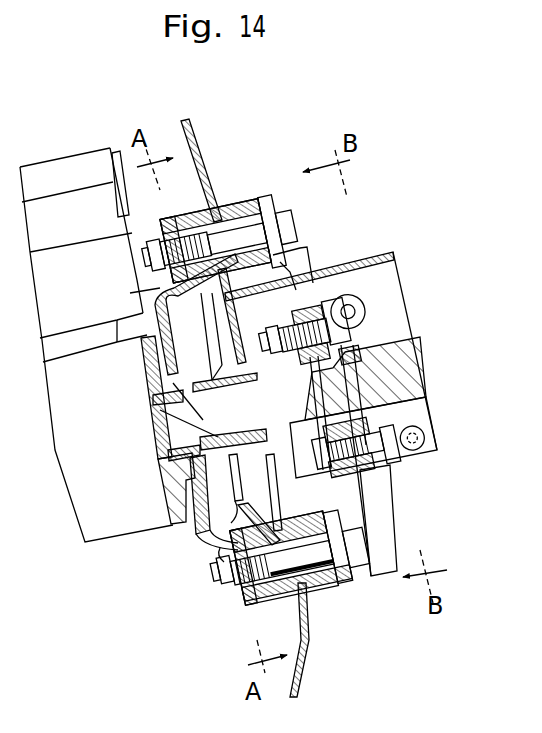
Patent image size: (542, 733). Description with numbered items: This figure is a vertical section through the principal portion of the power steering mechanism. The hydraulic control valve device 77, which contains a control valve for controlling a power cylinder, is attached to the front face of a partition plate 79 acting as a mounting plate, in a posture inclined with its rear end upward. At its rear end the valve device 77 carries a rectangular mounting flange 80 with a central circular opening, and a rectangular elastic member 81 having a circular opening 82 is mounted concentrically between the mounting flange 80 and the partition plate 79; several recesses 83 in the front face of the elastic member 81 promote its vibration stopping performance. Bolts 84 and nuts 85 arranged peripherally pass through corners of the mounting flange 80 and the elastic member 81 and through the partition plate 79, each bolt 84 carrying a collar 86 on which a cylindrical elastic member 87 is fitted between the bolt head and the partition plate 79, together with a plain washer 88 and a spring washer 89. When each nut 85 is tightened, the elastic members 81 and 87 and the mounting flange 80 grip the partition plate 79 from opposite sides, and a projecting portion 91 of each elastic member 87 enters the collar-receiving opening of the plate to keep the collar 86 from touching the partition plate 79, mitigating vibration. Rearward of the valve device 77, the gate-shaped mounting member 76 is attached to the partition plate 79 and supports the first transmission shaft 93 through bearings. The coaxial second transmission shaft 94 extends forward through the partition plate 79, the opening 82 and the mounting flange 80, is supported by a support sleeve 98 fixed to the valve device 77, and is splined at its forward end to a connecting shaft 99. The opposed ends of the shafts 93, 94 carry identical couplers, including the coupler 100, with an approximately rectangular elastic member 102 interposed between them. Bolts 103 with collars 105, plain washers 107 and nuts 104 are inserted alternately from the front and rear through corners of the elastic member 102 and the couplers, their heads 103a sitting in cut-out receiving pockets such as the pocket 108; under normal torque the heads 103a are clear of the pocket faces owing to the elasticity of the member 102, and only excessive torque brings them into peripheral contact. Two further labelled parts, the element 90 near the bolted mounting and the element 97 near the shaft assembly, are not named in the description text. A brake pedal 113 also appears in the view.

The mounting member 76 is at (393, 253).
The hydraulic control valve device 77 is at (68, 446).
The partition plate 79 is at (199, 150).
The mounting flange 80 is at (210, 536).
The elastic member 81 is at (224, 562).
The circular opening 82 is at (242, 330).
The recesses 83 is at (196, 302).
The bolts 84 is at (333, 585).
The nuts 85 is at (240, 590).
The collar 86 is at (318, 598).
The cylindrical elastic member 87 is at (246, 200).
The plain washer 88 is at (345, 590).
The spring washer 89 is at (210, 220).
The bolt 90 is at (145, 257).
The projecting portion 91 is at (130, 293).
The first transmission shaft 93 is at (430, 375).
The second transmission shaft 94 is at (157, 433).
The bar 97 is at (232, 478).
The support sleeve 98 is at (246, 452).
The connecting shaft 99 is at (167, 480).
The coupler 100 is at (395, 425).
The elastic member 102 is at (312, 305).
The bolts 103 is at (362, 303).
The bolt heads 103a is at (362, 318).
The nuts 104 is at (153, 398).
The collars 105 is at (340, 300).
The plain washers 107 is at (290, 280).
The receiving pocket 108 is at (360, 355).
The brake pedal 113 is at (380, 503).